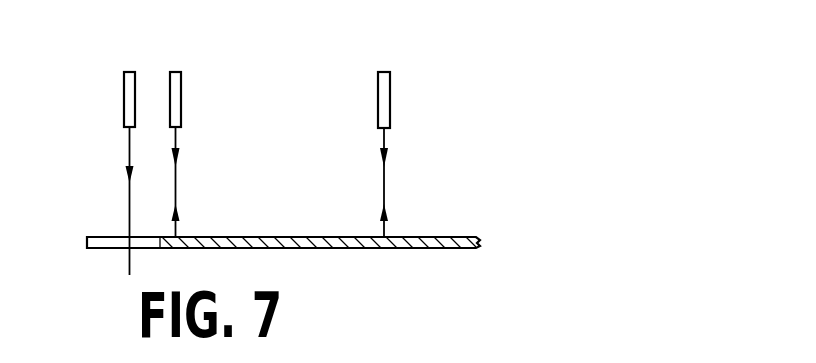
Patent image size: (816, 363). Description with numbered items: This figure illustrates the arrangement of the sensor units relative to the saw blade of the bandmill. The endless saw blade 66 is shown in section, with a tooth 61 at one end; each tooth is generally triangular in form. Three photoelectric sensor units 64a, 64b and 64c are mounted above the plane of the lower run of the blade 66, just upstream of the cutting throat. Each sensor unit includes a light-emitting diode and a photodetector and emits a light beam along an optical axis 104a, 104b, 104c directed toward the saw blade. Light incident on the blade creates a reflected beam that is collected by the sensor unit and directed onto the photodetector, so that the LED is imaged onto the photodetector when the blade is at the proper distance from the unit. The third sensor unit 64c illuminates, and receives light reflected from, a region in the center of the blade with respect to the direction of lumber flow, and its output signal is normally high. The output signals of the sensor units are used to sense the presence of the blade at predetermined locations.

The sensor unit 64a is at (123, 90).
The sensor unit 64b is at (182, 97).
The third sensor unit 64c is at (391, 98).
The optical axis 104a is at (128, 197).
The optical axis 104b is at (177, 197).
The optical axis 104c is at (385, 188).
The tooth 61 is at (103, 247).
The endless saw blade 66 is at (370, 248).